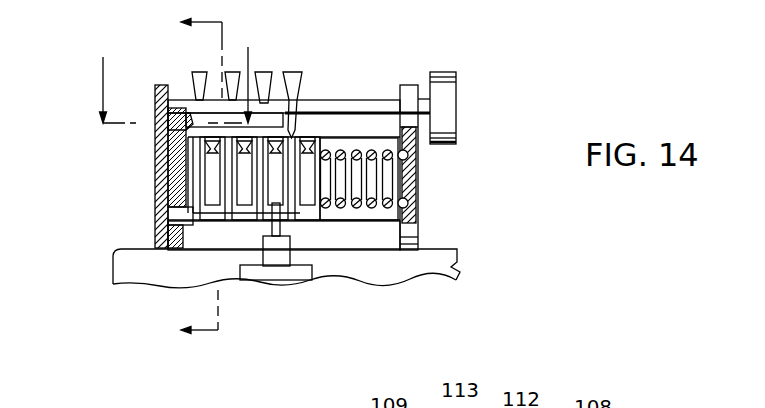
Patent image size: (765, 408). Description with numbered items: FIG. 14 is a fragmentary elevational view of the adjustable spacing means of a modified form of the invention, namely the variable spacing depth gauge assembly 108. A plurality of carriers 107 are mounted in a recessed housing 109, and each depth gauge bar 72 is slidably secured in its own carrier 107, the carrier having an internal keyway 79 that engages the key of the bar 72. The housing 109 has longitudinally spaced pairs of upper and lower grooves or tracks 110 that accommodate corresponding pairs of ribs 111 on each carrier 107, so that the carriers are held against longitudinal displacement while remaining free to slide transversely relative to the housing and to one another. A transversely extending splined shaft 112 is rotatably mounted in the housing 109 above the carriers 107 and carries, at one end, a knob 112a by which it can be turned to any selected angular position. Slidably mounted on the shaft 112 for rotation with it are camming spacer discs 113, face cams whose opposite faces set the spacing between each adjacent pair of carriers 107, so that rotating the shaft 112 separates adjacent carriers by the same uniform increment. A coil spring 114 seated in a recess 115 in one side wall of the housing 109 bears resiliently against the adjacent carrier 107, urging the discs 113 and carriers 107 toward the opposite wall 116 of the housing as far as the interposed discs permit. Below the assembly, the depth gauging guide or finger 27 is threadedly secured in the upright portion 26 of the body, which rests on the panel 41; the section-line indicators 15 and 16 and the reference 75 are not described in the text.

The section line 15- 15 is at (179, 177).
The section line 16- 16 is at (170, 65).
The upright portion 26 is at (247, 281).
The depth gauging guide or finger 27 is at (273, 281).
The panel 41 is at (458, 274).
The depth gauge bar 72 is at (213, 180).
The post 75 is at (304, 222).
The internal keyway 79 is at (295, 136).
The carrier 107 is at (170, 145).
The variable spacing depth gauge assembly 108 is at (415, 237).
The recessed housing 109 is at (413, 246).
The grooves or tracks 110 is at (178, 110).
The ribs 111 is at (155, 227).
The splined shaft 112 is at (325, 107).
The knob 112a is at (455, 92).
The camming spacer disc 113 is at (267, 73).
The coil spring 114 is at (357, 206).
The recess 115 is at (408, 176).
The opposite wall 116 is at (152, 172).